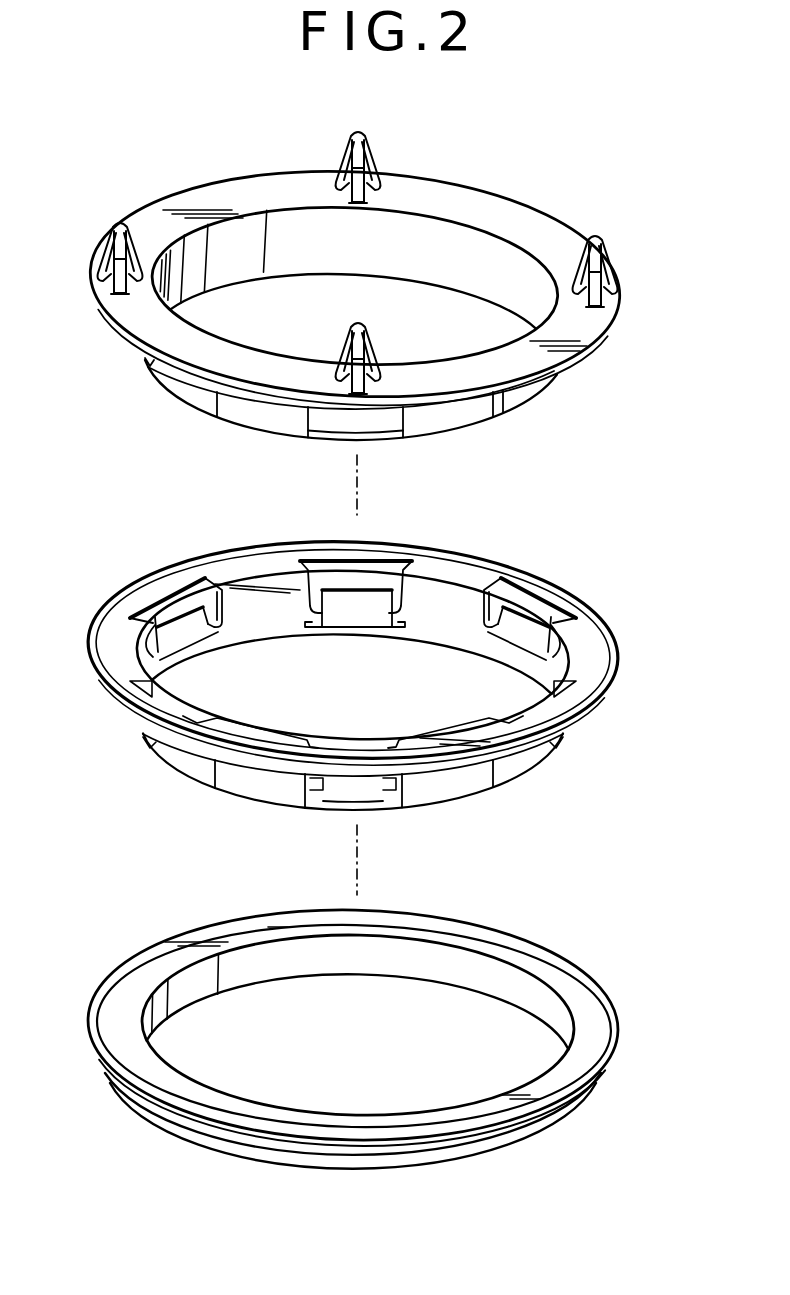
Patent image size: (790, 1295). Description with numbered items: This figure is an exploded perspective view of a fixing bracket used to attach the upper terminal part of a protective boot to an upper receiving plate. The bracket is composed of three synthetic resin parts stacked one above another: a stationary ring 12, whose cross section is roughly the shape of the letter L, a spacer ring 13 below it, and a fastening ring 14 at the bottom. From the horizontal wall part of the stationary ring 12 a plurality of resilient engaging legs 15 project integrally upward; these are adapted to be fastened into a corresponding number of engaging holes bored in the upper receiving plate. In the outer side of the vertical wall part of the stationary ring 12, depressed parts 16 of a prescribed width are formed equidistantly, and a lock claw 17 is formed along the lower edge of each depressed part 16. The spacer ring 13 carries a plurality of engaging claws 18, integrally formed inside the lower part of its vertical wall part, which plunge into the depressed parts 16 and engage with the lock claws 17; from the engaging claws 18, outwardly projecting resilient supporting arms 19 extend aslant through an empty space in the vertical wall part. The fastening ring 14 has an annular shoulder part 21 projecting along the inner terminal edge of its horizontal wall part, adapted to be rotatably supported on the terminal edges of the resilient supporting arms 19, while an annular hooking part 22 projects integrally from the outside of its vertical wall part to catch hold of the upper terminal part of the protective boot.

The stationary ring 12 is at (588, 343).
The spacer ring 13 is at (595, 655).
The fastening ring 14 is at (583, 993).
The resilient engaging legs 15 is at (365, 133).
The depressed parts 16 is at (333, 413).
The lock claws 17 is at (380, 437).
The engaging claws 18 is at (190, 650).
The resilient supporting arms 19 is at (185, 617).
The annular shoulder part 21 is at (400, 926).
The annular hooking part 22 is at (462, 1150).